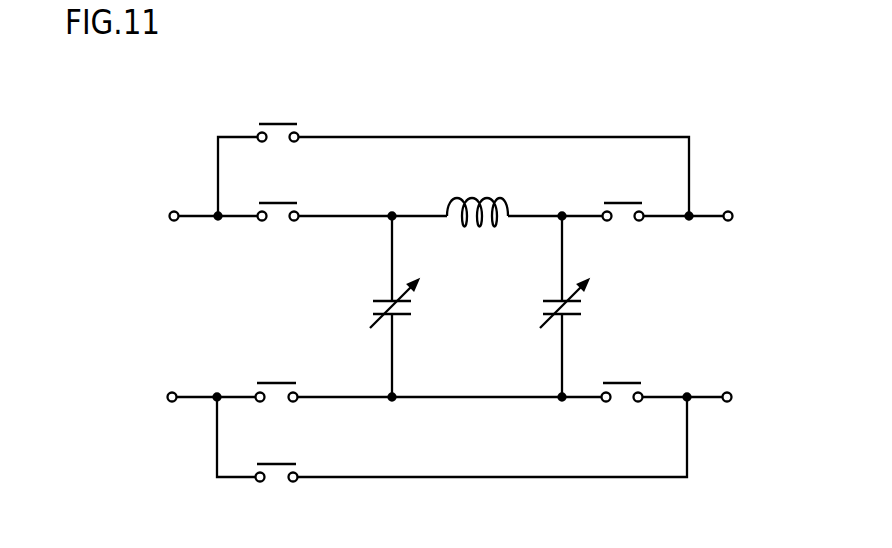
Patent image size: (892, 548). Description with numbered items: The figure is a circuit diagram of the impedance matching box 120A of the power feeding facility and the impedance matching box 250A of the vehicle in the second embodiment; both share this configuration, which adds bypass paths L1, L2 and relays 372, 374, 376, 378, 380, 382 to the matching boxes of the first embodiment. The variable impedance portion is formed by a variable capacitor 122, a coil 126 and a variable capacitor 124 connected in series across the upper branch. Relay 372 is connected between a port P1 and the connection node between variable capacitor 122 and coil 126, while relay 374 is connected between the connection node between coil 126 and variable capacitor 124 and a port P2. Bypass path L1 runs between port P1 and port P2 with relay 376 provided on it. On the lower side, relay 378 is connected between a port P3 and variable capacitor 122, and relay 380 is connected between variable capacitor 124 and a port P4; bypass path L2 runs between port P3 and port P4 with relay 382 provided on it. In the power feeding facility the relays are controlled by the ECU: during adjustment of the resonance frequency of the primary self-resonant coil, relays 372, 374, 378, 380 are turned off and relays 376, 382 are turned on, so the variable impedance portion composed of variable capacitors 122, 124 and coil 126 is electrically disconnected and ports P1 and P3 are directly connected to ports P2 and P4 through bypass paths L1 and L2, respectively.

The impedance matching box 120A is at (297, 69).
The impedance matching box 250A is at (450, 303).
The variable capacitor 122 is at (381, 297).
The variable capacitor 124 is at (551, 297).
The coil 126 is at (468, 198).
The relay 372 is at (277, 203).
The relay 374 is at (623, 203).
The relay 376 is at (277, 125).
The relay 378 is at (276, 383).
The relay 380 is at (622, 383).
The relay 382 is at (276, 464).
The bypass path L1 is at (545, 137).
The bypass path L2 is at (545, 478).
The port P1 is at (172, 211).
The port P2 is at (731, 211).
The port P3 is at (170, 392).
The port P4 is at (731, 392).